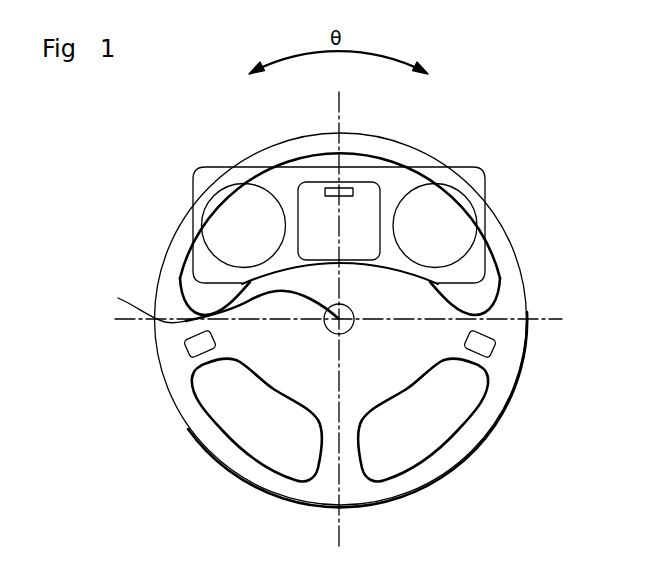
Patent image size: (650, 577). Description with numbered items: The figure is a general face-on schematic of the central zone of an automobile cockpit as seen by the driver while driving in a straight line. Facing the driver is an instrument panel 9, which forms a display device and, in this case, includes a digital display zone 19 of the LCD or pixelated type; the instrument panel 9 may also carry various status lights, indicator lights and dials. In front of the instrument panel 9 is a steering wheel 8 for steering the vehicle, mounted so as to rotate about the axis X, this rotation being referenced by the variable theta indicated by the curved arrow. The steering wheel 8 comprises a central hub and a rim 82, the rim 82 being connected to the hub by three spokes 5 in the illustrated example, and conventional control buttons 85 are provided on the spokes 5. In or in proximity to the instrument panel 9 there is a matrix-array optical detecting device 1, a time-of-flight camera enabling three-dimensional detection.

The steering wheel 8 is at (184, 147).
The rim 82 is at (251, 143).
The matrix-array optical detecting device 1 is at (351, 180).
The digital display zone 19 is at (368, 183).
The instrument panel 9 is at (477, 168).
The control buttons 85 is at (485, 342).
The spokes 5 is at (203, 358).